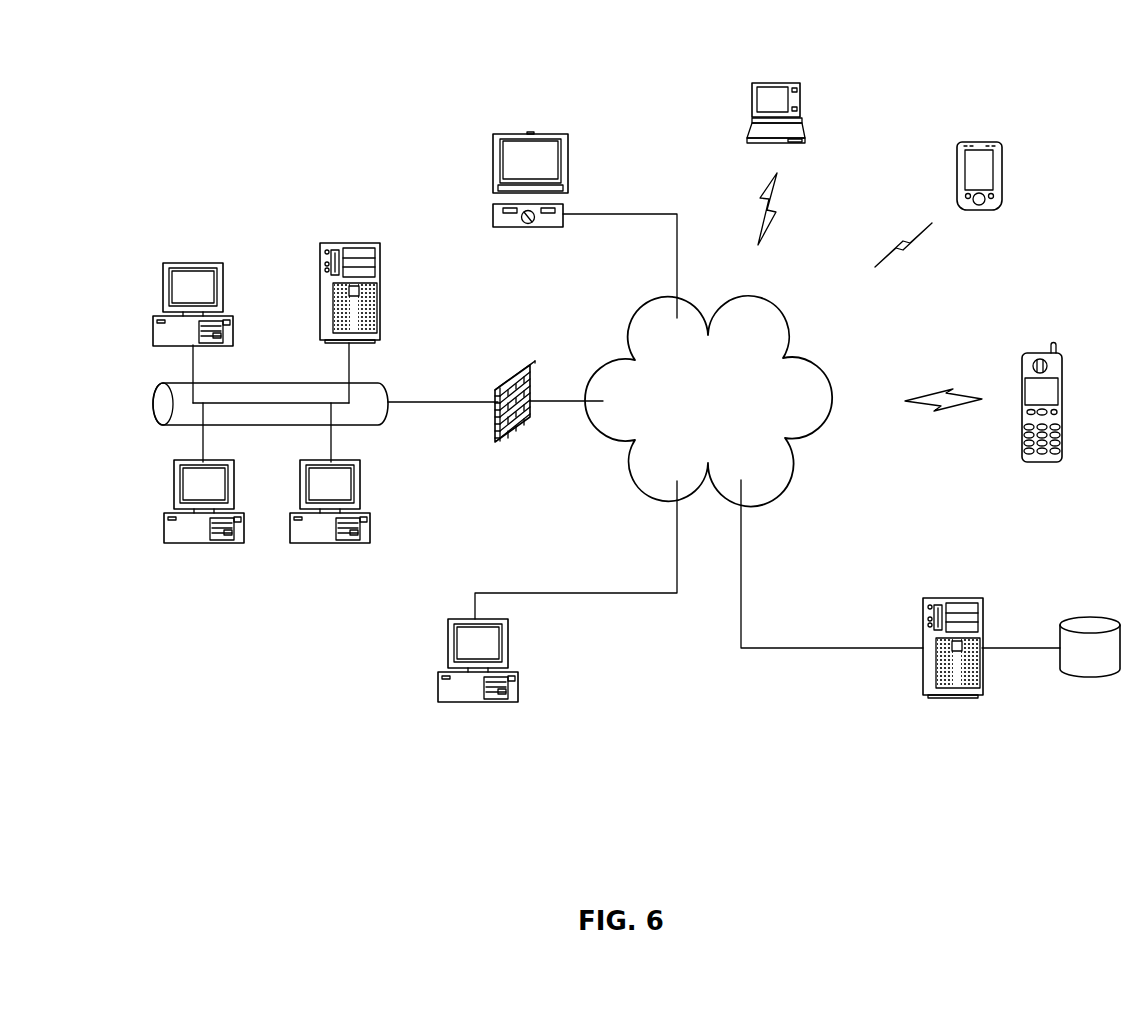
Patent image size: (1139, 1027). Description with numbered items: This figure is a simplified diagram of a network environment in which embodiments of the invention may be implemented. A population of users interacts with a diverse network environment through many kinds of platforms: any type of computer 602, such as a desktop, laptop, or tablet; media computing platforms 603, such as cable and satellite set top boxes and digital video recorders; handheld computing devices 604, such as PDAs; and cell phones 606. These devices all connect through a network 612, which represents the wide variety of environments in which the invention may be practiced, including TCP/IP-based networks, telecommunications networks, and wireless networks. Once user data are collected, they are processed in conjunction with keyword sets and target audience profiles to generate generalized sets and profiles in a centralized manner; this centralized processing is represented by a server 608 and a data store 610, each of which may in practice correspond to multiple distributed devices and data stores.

The computer 602 is at (163, 293).
The media computing platform 603 is at (493, 218).
The handheld computing device 604 is at (960, 142).
The cell phone 606 is at (1026, 360).
The server 608 is at (937, 599).
The data store 610 is at (1088, 615).
The network 612 is at (645, 333).